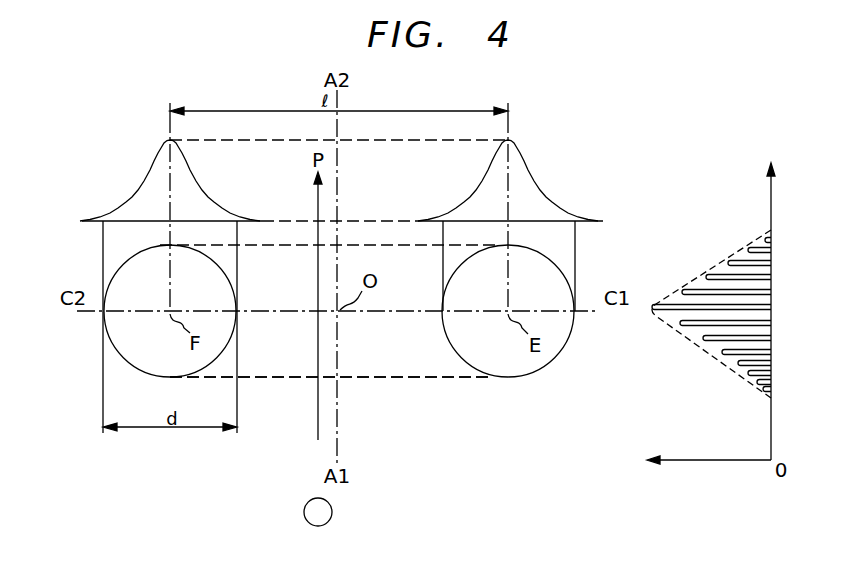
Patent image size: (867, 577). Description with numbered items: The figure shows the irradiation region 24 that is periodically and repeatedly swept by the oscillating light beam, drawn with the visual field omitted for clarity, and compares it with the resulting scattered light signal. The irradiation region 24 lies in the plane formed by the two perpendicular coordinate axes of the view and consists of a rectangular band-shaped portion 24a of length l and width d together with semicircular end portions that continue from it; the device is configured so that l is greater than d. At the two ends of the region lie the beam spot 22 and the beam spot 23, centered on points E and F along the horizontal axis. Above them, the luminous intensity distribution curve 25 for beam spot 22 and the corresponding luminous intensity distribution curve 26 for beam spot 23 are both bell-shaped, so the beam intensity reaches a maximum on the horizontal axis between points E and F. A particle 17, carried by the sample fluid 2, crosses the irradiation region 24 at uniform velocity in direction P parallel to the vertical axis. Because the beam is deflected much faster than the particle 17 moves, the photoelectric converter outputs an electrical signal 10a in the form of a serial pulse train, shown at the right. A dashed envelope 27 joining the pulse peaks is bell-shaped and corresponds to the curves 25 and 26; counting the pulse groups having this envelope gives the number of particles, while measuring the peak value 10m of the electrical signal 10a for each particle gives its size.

The sample fluid 2 is at (287, 404).
The particle 17 is at (330, 512).
The beam spot 22 is at (563, 268).
The beam spot 23 is at (226, 268).
The irradiation region 24 is at (427, 381).
The rectangular band-shaped portion 24a is at (375, 343).
The luminous intensity distribution curve 25 is at (536, 186).
The luminous intensity distribution curve 26 is at (197, 183).
The envelope 27 is at (672, 338).
The electrical signal 10a is at (690, 290).
The peak value 10m is at (652, 305).